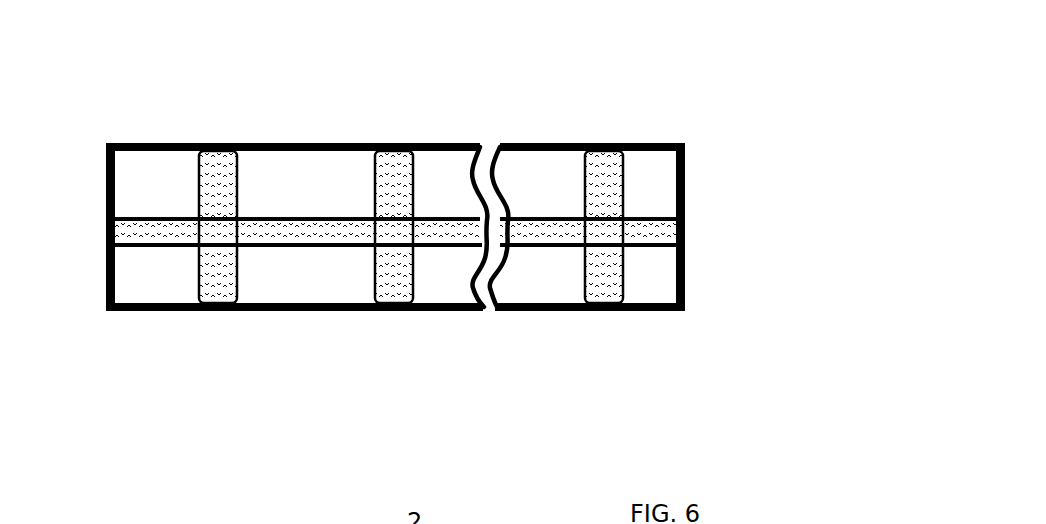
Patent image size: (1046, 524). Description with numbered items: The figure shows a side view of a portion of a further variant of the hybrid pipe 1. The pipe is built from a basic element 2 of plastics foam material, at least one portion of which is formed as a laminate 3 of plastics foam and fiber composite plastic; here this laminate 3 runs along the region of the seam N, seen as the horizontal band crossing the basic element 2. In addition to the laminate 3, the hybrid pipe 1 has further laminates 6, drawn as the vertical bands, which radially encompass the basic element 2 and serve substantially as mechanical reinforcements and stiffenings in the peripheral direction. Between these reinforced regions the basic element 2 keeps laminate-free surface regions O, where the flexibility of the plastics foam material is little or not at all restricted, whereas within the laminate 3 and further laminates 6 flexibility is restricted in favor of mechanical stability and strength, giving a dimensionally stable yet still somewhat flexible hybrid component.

The hybrid pipe 1 is at (375, 119).
The basic element 2 is at (144, 143).
The laminate 3 is at (136, 228).
The further laminate 6 is at (215, 283).
The seam N is at (99, 215).
The laminate-free surface region O is at (250, 183).